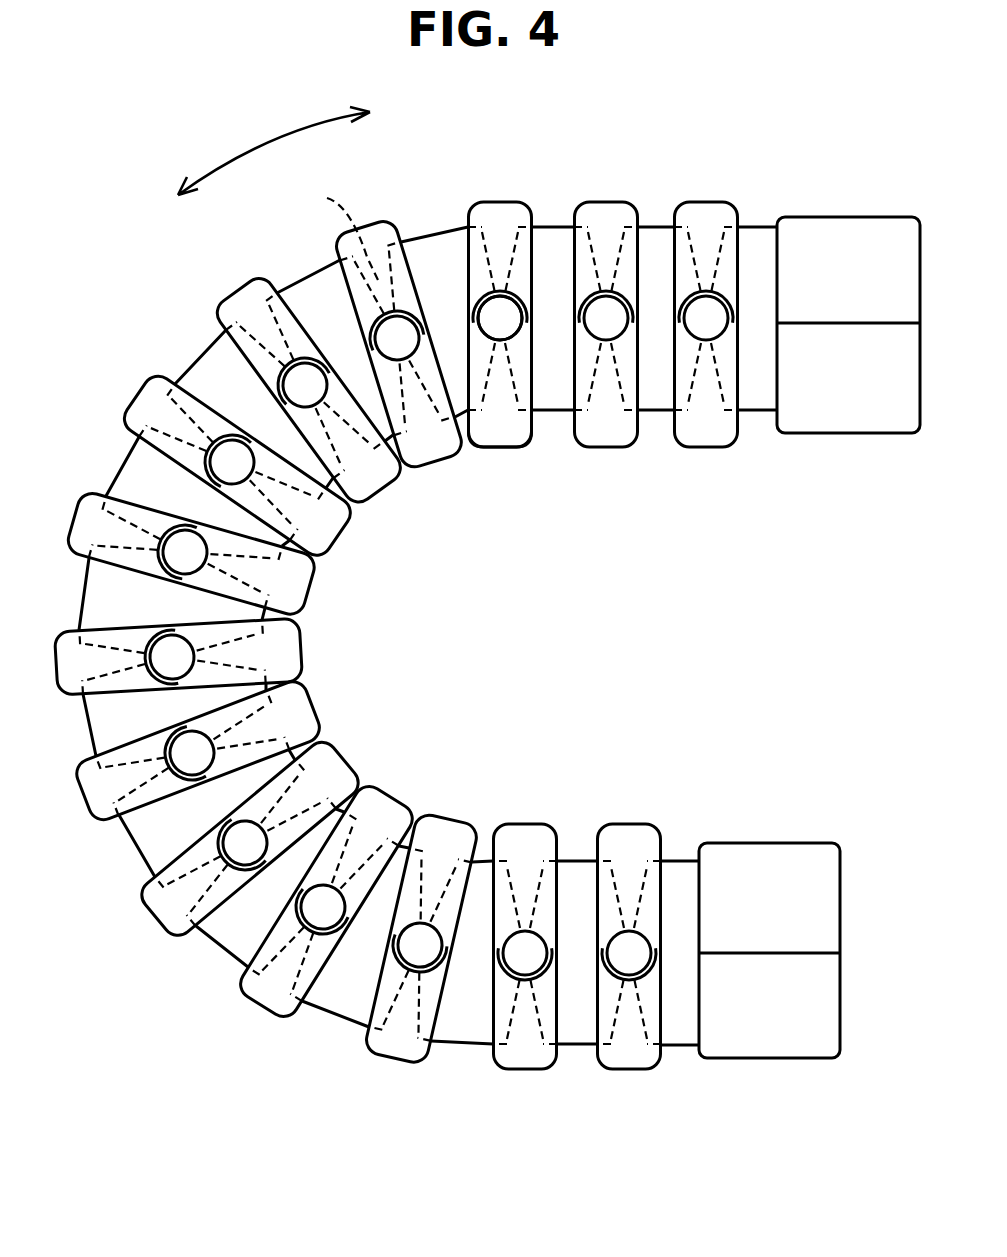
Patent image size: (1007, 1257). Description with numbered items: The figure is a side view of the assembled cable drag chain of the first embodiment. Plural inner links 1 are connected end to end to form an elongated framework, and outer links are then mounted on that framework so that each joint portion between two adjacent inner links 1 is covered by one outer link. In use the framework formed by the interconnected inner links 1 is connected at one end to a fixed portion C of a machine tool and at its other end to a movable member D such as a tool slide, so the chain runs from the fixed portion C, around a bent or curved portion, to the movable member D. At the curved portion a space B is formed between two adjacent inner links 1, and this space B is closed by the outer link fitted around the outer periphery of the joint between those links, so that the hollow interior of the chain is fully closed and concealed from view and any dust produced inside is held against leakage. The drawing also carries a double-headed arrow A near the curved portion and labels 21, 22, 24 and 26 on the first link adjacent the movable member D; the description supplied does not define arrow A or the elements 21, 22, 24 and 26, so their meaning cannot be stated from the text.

The inner link 1 is at (415, 604).
The link plate 21 is at (500, 210).
The connecting portion 22 is at (503, 430).
The pivot pin 24 is at (502, 318).
The pivot hole 26 is at (500, 318).
The swing direction A is at (274, 151).
The space B is at (341, 231).
The fixed portion C is at (764, 860).
The movable member D is at (848, 235).